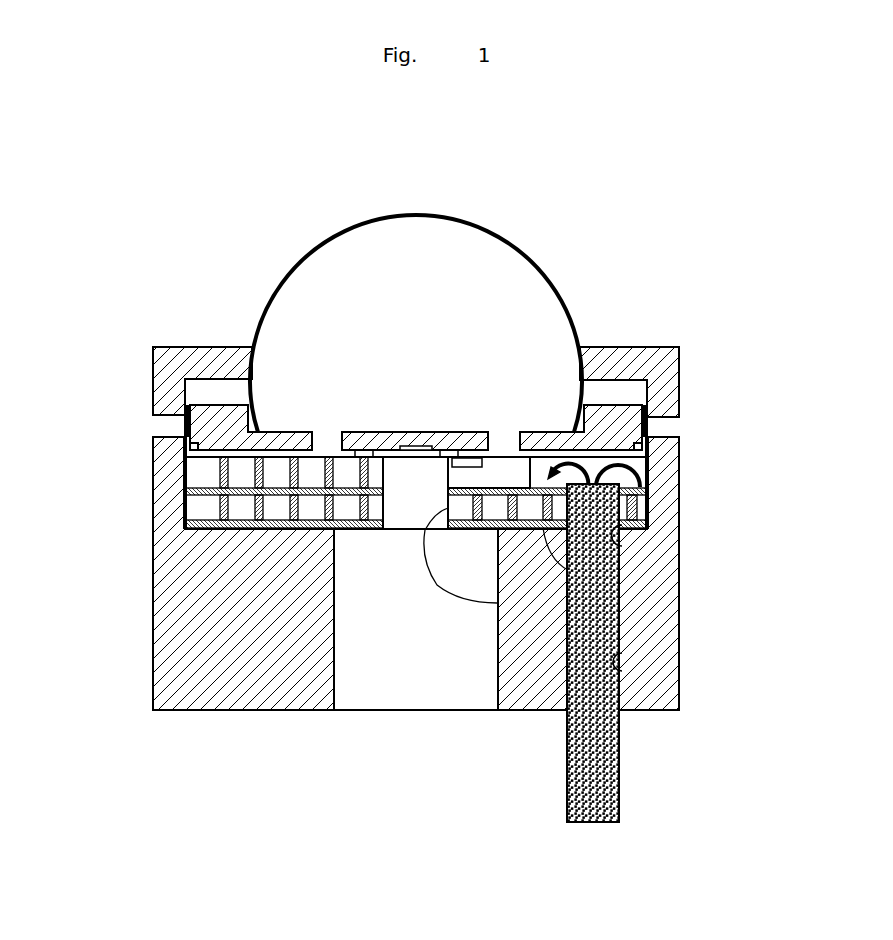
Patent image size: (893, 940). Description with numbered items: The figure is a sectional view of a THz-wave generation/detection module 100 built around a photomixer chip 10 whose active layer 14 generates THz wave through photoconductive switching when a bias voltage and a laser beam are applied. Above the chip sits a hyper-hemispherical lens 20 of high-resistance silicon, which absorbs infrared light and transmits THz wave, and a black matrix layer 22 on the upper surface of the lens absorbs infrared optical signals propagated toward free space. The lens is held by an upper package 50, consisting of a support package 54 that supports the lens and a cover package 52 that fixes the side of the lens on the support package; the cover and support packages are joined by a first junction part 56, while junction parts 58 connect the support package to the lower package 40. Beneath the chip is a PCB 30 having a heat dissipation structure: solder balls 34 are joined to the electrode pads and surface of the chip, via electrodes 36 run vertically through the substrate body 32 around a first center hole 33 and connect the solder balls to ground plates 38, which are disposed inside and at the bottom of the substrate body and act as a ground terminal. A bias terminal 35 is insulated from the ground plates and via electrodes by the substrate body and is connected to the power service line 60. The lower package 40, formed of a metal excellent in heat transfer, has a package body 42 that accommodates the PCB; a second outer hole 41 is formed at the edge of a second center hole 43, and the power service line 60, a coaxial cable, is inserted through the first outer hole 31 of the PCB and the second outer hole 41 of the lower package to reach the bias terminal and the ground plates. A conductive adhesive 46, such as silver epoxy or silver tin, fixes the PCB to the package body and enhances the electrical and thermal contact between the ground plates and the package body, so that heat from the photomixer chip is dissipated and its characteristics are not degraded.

The THz-wave generation/detection module 100 is at (620, 278).
The hyper-hemispherical lens 20 is at (428, 218).
The black matrix layer 22 is at (494, 234).
The photomixer chip 10 is at (461, 436).
The active layer 14 is at (415, 445).
The PCB 30 is at (735, 400).
The first outer hole 31 is at (622, 536).
The substrate body 32 is at (520, 475).
The first center hole 33 is at (497, 603).
The solder balls 34 is at (530, 448).
The bias terminal 35 is at (482, 463).
The via electrodes 36 is at (548, 511).
The ground plates 38 is at (568, 570).
The lower package 40 is at (88, 500).
The second outer hole 41 is at (617, 668).
The package body 42 is at (170, 577).
The second center hole 43 is at (370, 637).
The conductive adhesive 46 is at (187, 503).
The upper package 50 is at (88, 356).
The cover package 52 is at (163, 366).
The support package 54 is at (212, 410).
The first junction part 56 is at (187, 420).
The junction parts 58 is at (190, 442).
The power service line 60 is at (602, 631).